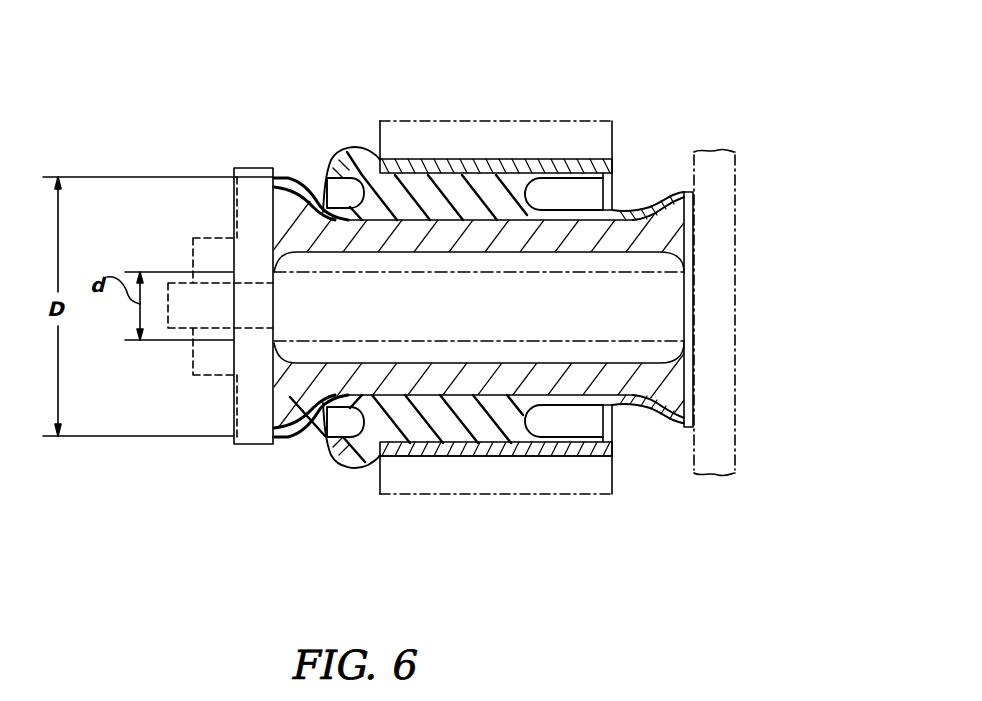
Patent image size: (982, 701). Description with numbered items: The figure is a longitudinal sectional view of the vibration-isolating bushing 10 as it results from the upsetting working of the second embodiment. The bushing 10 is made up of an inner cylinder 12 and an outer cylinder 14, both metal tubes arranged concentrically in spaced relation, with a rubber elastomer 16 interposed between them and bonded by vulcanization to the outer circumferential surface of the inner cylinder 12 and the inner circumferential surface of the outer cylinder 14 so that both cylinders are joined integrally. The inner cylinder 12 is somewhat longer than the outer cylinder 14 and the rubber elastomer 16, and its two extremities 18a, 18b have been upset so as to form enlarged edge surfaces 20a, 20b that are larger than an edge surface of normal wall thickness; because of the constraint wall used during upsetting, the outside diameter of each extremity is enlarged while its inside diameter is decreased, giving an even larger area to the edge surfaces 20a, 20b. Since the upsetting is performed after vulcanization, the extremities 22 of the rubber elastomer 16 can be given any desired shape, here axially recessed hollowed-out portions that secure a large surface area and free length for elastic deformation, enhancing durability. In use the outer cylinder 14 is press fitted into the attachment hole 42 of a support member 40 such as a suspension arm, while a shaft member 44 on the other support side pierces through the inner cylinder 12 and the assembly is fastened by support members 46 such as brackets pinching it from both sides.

The vibration-isolating bushing 10 is at (485, 55).
The inner cylinder 12 is at (393, 385).
The outer cylinder 14 is at (407, 164).
The rubber elastomer 16 is at (503, 410).
The extremity of the inner cylinder 18a is at (296, 180).
The extremity of the inner cylinder 18b is at (678, 194).
The enlarged edge surface 20a is at (245, 445).
The enlarged edge surface 20b is at (689, 400).
The extremities of the rubber elastomer 22 is at (337, 424).
The support member 40 is at (528, 121).
The attachment hole 42 is at (449, 443).
The shaft member 44 is at (618, 345).
The support members 46 is at (257, 168).